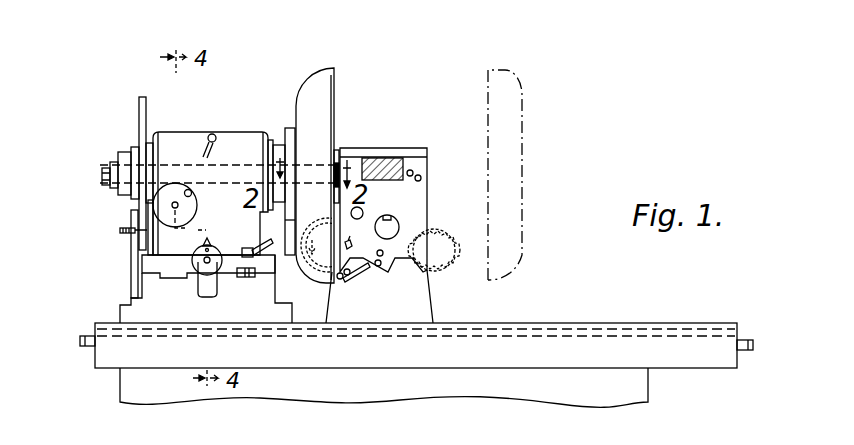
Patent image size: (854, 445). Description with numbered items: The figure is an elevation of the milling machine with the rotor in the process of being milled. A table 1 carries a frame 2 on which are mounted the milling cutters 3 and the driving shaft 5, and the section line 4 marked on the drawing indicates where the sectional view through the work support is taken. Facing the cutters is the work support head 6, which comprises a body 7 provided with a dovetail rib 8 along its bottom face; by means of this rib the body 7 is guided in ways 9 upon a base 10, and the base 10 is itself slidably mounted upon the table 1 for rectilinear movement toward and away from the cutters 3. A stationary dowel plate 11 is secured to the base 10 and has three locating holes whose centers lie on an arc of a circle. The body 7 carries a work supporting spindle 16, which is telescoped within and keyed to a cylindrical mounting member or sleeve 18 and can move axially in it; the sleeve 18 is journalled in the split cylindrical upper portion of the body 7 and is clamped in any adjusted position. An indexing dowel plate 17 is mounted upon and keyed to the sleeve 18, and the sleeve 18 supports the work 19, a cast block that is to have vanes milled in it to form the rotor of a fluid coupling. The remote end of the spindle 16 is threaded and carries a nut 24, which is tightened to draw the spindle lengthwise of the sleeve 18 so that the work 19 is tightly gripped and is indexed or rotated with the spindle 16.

The table 1 is at (585, 327).
The frame 2 is at (425, 193).
The milling cutters 3 is at (442, 222).
The bar 4 is at (336, 278).
The driving shaft 5 is at (393, 222).
The work support head 6 is at (217, 174).
The body 7 is at (247, 133).
The dovetail rib 8 is at (183, 274).
The ways 9 is at (153, 273).
The base 10 is at (143, 293).
The stationary dowel plate 11 is at (131, 263).
The work supporting spindle 16 is at (102, 176).
The indexing dowel plate 17 is at (146, 109).
The cylindrical mounting member 18 is at (293, 128).
The work 19 is at (331, 89).
The nut 24 is at (123, 195).